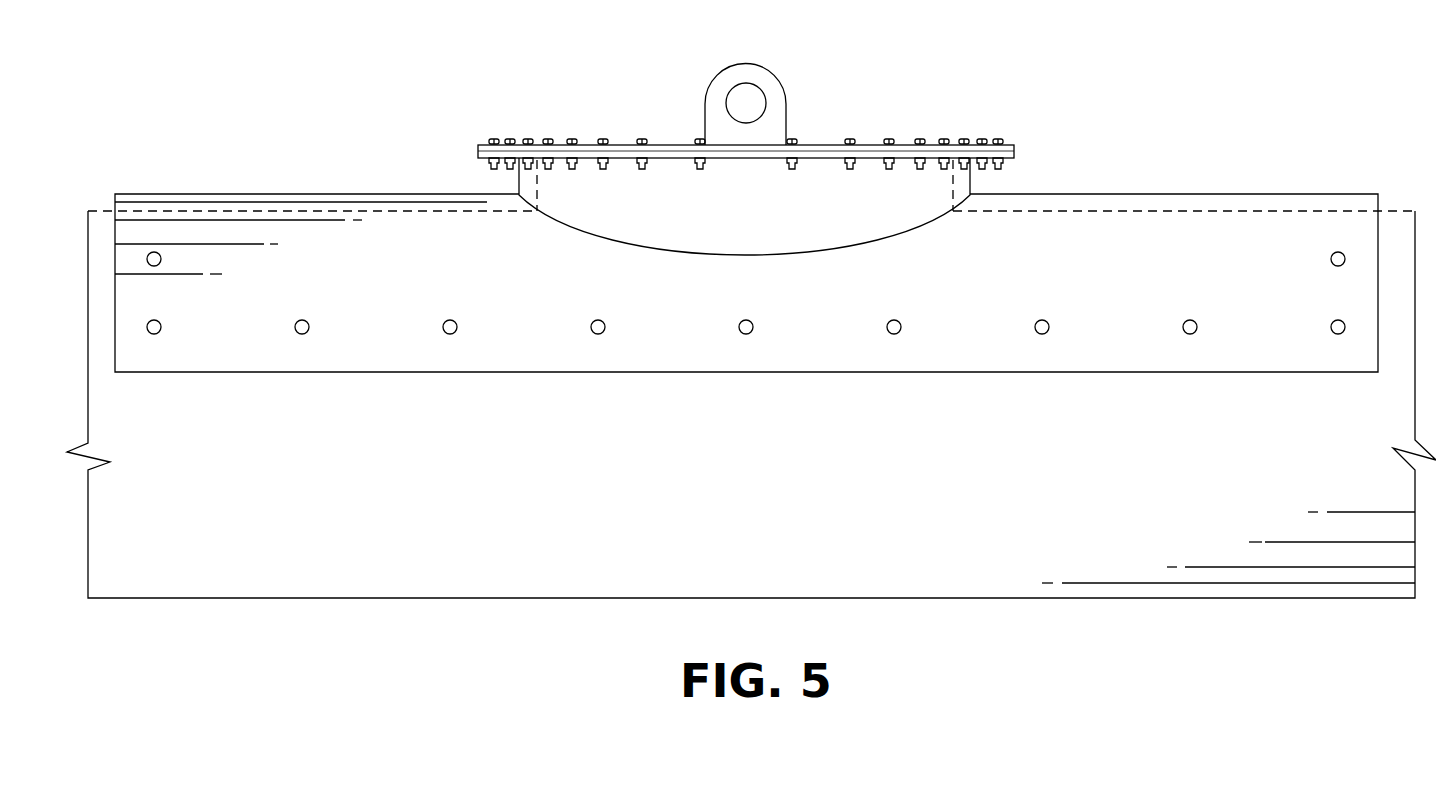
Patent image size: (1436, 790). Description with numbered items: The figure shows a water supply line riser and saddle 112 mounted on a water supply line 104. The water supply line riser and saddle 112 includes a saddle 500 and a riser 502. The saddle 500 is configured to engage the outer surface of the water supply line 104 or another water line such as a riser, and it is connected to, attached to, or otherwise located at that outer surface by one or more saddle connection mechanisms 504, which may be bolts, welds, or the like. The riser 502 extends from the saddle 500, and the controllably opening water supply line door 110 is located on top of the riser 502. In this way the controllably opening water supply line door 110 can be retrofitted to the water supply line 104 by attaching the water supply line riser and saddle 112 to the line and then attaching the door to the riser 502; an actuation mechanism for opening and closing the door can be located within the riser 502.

The water supply line 104 is at (247, 580).
The controllably opening water supply line door 110 is at (809, 86).
The water supply line riser and saddle 112 is at (923, 152).
The saddle 500 is at (1128, 237).
The riser 502 is at (968, 182).
The saddle connection mechanisms 504 is at (448, 318).